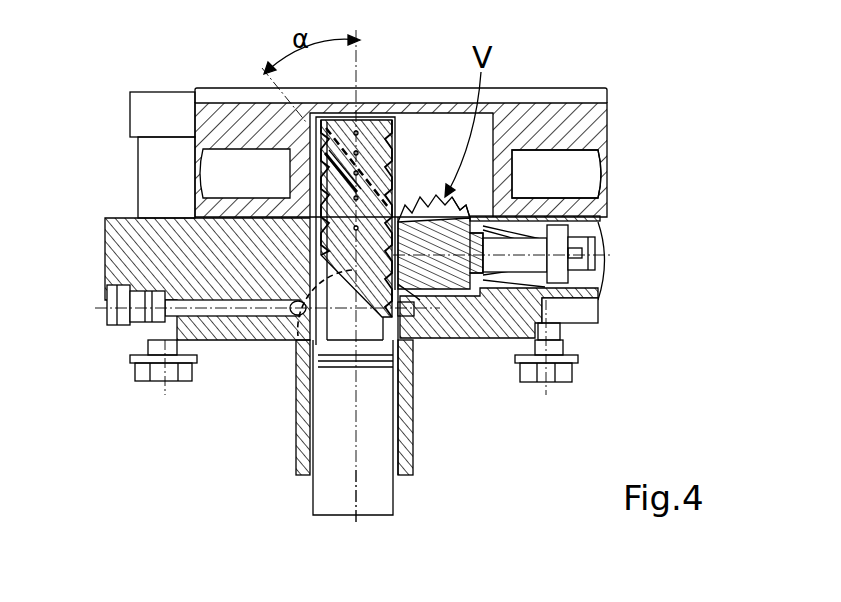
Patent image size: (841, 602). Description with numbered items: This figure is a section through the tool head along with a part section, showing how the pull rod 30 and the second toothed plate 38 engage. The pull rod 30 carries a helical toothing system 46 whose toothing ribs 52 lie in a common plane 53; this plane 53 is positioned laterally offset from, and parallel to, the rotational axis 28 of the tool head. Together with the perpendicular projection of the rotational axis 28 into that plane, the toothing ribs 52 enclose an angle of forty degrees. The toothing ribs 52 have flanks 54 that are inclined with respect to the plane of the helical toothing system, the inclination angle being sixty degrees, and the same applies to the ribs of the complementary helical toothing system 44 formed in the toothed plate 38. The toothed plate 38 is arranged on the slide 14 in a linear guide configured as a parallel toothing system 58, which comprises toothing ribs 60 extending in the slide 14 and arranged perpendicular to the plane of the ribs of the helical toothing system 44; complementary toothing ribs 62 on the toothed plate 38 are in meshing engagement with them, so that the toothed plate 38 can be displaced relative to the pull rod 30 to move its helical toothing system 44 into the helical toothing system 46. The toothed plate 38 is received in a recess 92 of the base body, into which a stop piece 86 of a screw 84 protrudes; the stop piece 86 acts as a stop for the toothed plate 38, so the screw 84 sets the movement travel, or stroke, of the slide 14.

The slide 14 is at (598, 130).
The rotational axis 28 is at (356, 492).
The pull rod 30 is at (380, 498).
The second toothed plate 38 is at (446, 278).
The helical toothing system 44 is at (497, 220).
The helical toothing system 46 is at (342, 130).
The toothing ribs 52 is at (320, 200).
The common plane 53 is at (312, 327).
The flanks 54 is at (370, 135).
The parallel toothing system 58 is at (416, 190).
The toothing ribs 60 is at (427, 205).
The toothing ribs 62 is at (466, 225).
The screw 84 is at (562, 236).
The stop piece 86 is at (483, 264).
The recess 92 is at (475, 287).